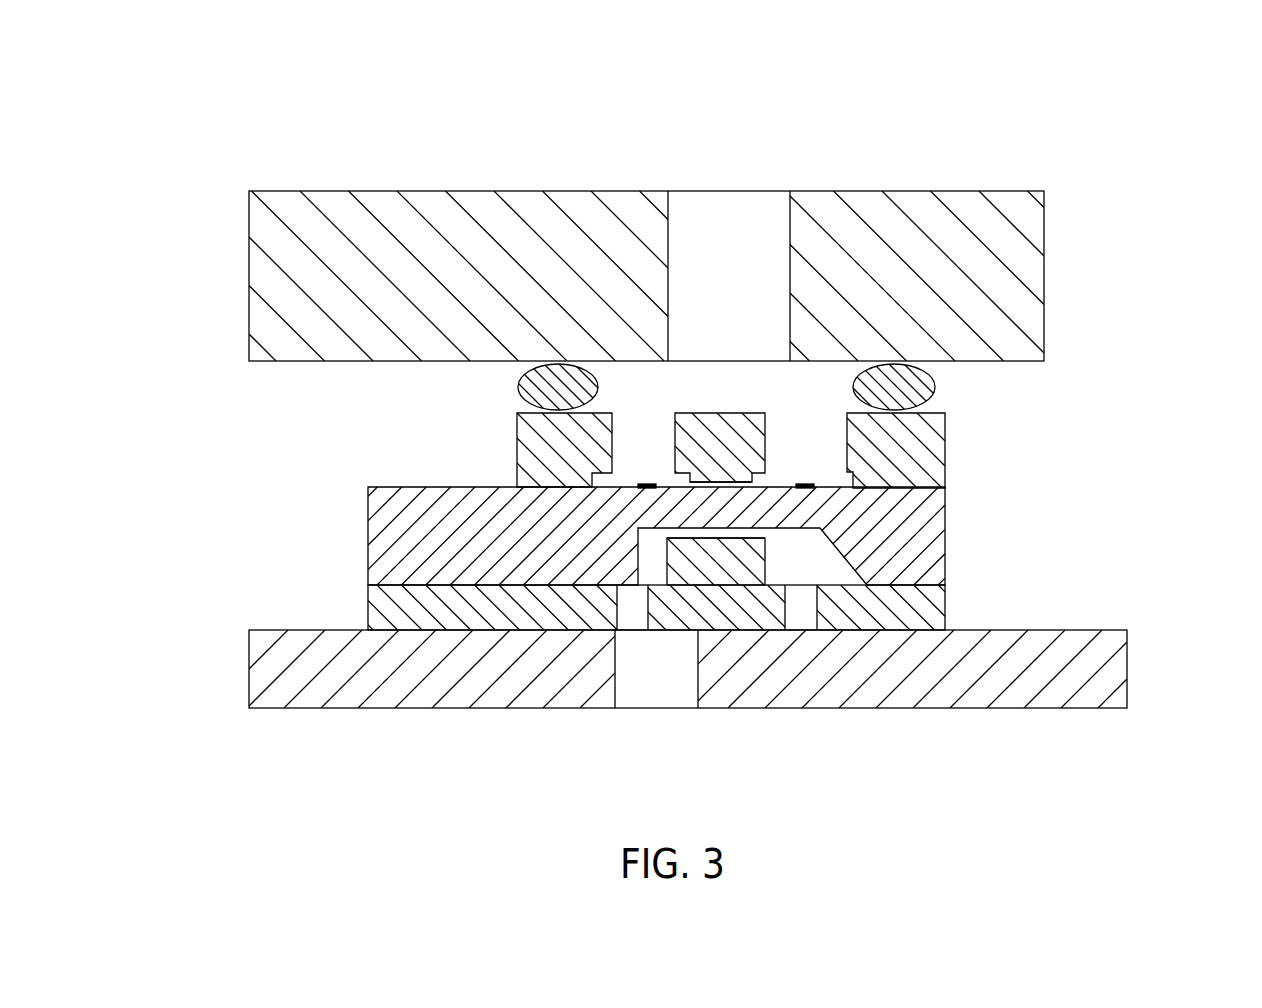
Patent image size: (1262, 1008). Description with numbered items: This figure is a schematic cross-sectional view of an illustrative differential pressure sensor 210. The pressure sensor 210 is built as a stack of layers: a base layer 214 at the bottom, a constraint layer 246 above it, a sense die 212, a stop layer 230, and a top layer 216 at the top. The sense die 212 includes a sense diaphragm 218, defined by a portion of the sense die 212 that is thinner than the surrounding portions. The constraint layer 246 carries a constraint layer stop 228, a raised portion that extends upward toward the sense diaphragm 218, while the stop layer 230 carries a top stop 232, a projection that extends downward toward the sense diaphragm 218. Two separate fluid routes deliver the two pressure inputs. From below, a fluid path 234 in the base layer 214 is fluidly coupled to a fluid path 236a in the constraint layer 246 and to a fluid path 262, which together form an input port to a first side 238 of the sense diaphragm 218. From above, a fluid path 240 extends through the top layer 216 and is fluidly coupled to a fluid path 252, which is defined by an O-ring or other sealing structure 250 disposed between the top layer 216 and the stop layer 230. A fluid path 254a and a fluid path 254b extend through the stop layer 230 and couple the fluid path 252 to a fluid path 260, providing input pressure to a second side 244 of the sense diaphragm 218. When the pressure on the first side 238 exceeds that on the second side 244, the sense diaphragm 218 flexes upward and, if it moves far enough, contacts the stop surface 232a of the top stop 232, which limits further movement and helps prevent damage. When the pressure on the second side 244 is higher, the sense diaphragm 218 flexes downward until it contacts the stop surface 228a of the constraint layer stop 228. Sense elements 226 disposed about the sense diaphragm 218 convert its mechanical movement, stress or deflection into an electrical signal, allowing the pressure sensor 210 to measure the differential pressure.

The differential pressure sensor 210 is at (283, 82).
The sense die 212 is at (945, 573).
The base layer 214 is at (1113, 670).
The top layer 216 is at (1032, 274).
The sense diaphragm 218 is at (700, 511).
The sense elements 226 is at (640, 483).
The constraint layer stop 228 is at (714, 562).
The stop surface 228a is at (732, 542).
The stop layer 230 is at (945, 453).
The top stop 232 is at (715, 473).
The stop surface 232a is at (735, 488).
The fluid path 234 is at (652, 697).
The fluid path 236a is at (632, 615).
The first side 238 is at (750, 512).
The fluid path 240 is at (728, 205).
The second side 244 is at (592, 474).
The constraint layer 246 is at (945, 605).
The sealing structure 250 is at (523, 390).
The fluid path 252 is at (697, 400).
The fluid path 254a is at (669, 454).
The fluid path 254b is at (837, 454).
The fluid path 260 is at (833, 484).
The fluid path 262 is at (828, 557).